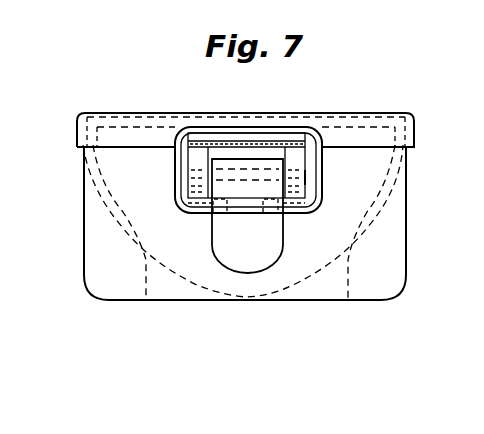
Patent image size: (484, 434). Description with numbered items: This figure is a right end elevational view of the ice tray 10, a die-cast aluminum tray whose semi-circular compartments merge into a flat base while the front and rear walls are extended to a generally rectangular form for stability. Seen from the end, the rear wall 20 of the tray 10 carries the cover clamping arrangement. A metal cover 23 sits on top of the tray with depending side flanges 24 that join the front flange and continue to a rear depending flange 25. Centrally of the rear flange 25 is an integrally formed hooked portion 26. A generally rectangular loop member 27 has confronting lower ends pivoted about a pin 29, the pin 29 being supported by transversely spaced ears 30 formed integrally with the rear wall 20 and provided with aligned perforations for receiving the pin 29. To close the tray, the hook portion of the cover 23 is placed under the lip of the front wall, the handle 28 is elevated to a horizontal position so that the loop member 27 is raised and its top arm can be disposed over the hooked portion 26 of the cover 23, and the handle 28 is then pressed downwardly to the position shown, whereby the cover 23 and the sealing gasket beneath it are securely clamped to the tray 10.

The ice tray 10 is at (406, 268).
The rear wall 20 is at (97, 262).
The metal cover 23 is at (376, 113).
The depending side flanges 24 is at (77, 136).
The rear depending flange 25 is at (150, 135).
The hooked portion 26 is at (267, 139).
The loop member 27 is at (177, 190).
The handle 28 is at (218, 237).
The pin 29 is at (308, 178).
The ears 30 is at (197, 160).